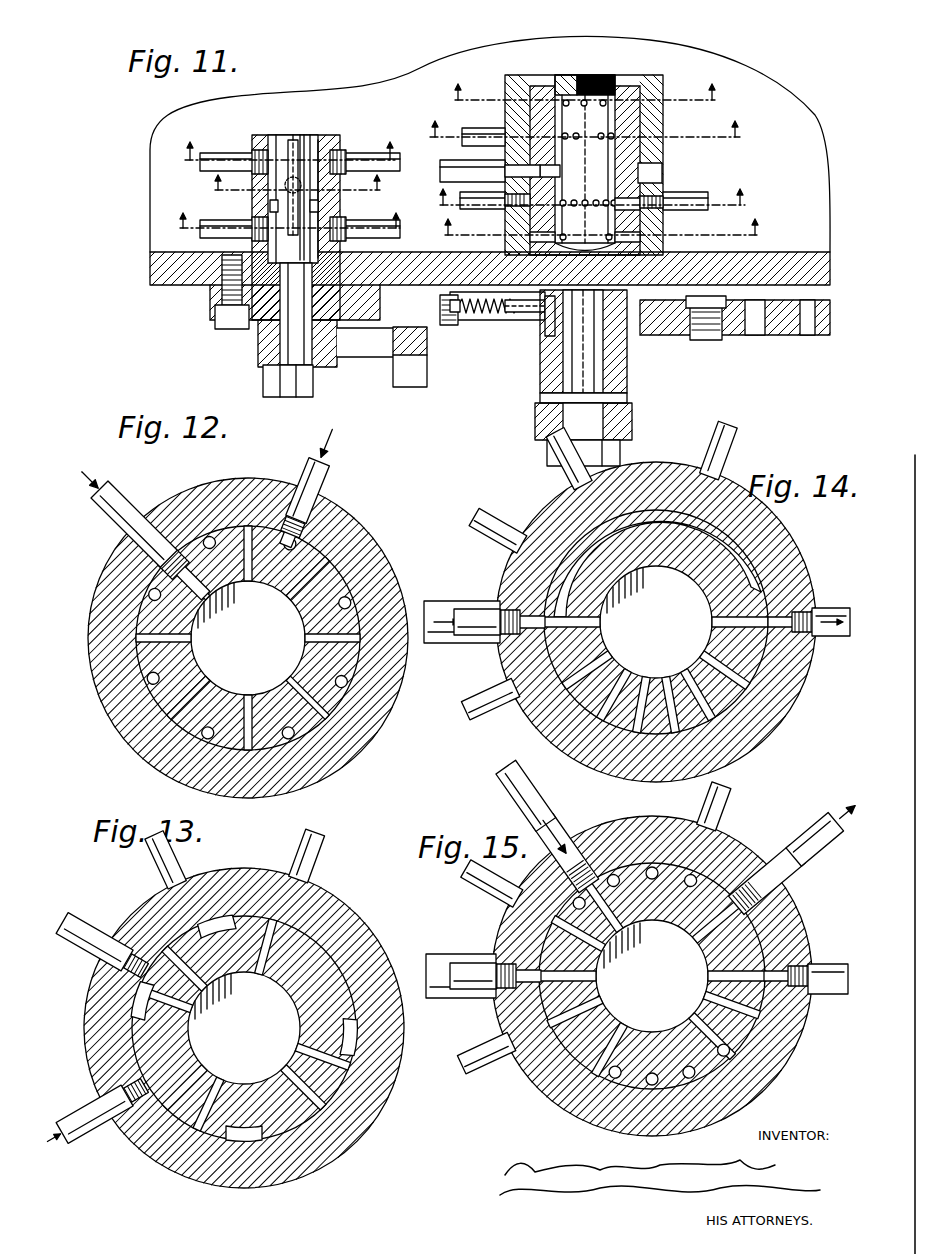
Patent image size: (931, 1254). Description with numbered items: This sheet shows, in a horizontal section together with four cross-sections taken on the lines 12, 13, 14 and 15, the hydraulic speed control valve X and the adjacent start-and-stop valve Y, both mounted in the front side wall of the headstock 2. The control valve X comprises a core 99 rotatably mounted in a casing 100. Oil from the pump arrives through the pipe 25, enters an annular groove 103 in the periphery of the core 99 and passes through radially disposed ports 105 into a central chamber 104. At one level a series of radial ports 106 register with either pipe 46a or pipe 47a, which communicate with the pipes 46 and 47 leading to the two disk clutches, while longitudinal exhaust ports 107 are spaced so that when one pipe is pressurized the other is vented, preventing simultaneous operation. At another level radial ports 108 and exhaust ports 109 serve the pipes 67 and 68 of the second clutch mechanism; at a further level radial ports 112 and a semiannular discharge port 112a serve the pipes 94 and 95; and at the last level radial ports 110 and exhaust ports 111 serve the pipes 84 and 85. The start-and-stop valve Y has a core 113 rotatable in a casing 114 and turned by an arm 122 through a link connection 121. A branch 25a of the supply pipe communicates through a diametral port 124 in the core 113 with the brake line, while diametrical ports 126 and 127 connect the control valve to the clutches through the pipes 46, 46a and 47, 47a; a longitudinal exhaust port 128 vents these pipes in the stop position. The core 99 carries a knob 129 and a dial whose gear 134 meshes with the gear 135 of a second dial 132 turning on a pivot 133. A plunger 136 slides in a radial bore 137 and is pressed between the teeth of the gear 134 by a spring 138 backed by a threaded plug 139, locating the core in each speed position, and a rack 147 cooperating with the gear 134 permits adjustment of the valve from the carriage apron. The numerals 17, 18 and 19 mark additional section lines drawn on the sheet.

In FIG. 11, the headstock 2 is at (165, 285).
In FIG. 11, the section line 12— 12 is at (583, 84).
In FIG. 11, the section line 13— 13 is at (584, 129).
In FIG. 11, the section line 14— 14 is at (589, 199).
In FIG. 11, the section line 15— 15 is at (601, 228).
In FIG. 11, the section line 17- 17 is at (290, 142).
In FIG. 11, the section line 18- 18 is at (295, 187).
In FIG. 11, the section line 19- 19 is at (282, 225).
In FIG. 11, the pipe 25 is at (455, 165).
In FIG. 14, the pipe 25 is at (480, 636).
In FIG. 15, the pipe 25 is at (483, 962).
In FIG. 11, the branch 25a is at (285, 184).
In FIG. 11, the pipe 46 is at (210, 238).
In FIG. 11, the pipe 46a is at (372, 238).
In FIG. 12, the pipe 46a is at (141, 533).
In FIG. 14, the pipe 46a is at (536, 468).
In FIG. 13, the pipe 46a is at (126, 863).
In FIG. 15, the pipe 46a is at (538, 826).
In FIG. 11, the pipe 47 is at (225, 153).
In FIG. 11, the pipe 47a is at (360, 153).
In FIG. 12, the pipe 47a is at (334, 487).
In FIG. 14, the pipe 47a is at (735, 450).
In FIG. 13, the pipe 47a is at (331, 856).
In FIG. 15, the pipe 47a is at (741, 804).
In FIG. 11, the pipe 67 is at (480, 128).
In FIG. 14, the pipe 67 is at (486, 533).
In FIG. 13, the pipe 67 is at (103, 943).
In FIG. 15, the pipe 67 is at (476, 887).
In FIG. 14, the pipe 68 is at (490, 711).
In FIG. 13, the pipe 68 is at (95, 1114).
In FIG. 15, the pipe 68 is at (486, 1065).
In FIG. 15, the pipe 84 is at (555, 837).
In FIG. 15, the pipe 85 is at (796, 855).
In FIG. 11, the pipe 94 is at (495, 209).
In FIG. 14, the pipe 94 is at (472, 640).
In FIG. 15, the pipe 94 is at (473, 993).
In FIG. 11, the pipe 95 is at (700, 192).
In FIG. 14, the pipe 95 is at (810, 604).
In FIG. 15, the pipe 95 is at (806, 996).
In FIG. 11, the core 99 is at (640, 120).
In FIG. 12, the core 99 is at (215, 638).
In FIG. 14, the core 99 is at (695, 622).
In FIG. 13, the core 99 is at (270, 1028).
In FIG. 15, the core 99 is at (685, 976).
In FIG. 11, the casing 100 is at (510, 58).
In FIG. 12, the casing 100 is at (248, 638).
In FIG. 14, the casing 100 is at (656, 622).
In FIG. 13, the casing 100 is at (244, 1028).
In FIG. 15, the casing 100 is at (652, 976).
In FIG. 11, the annular groove 103 is at (662, 172).
In FIG. 11, the chamber 104 is at (598, 90).
In FIG. 12, the chamber 104 is at (248, 638).
In FIG. 14, the chamber 104 is at (656, 622).
In FIG. 13, the chamber 104 is at (244, 1028).
In FIG. 15, the chamber 104 is at (652, 976).
In FIG. 11, the radially disposed ports 105 is at (560, 170).
In FIG. 11, the radial ports 106 is at (565, 75).
In FIG. 12, the radial ports 106 is at (248, 674).
In FIG. 12, the exhaust ports 107 is at (247, 662).
In FIG. 11, the radial ports 108 is at (586, 113).
In FIG. 13, the radial ports 108 is at (245, 984).
In FIG. 11, the exhaust ports 109 is at (570, 140).
In FIG. 13, the exhaust ports 109 is at (273, 1031).
In FIG. 11, the radial ports 110 is at (530, 238).
In FIG. 15, the radial ports 110 is at (694, 1012).
In FIG. 15, the exhaust ports 111 is at (701, 976).
In FIG. 11, the radial ports 112 is at (628, 206).
In FIG. 14, the radial ports 112 is at (689, 710).
In FIG. 11, the semiannular discharge port 112a is at (588, 213).
In FIG. 14, the semiannular discharge port 112a is at (657, 528).
In FIG. 11, the valve core 113 is at (280, 135).
In FIG. 11, the casing 114 is at (262, 135).
In FIG. 11, the link connection 121 is at (402, 370).
In FIG. 11, the arm 122 is at (360, 357).
In FIG. 11, the diametral port 124 is at (270, 206).
In FIG. 11, the diametrical port 126 is at (318, 210).
In FIG. 11, the diametrical port 127 is at (305, 150).
In FIG. 11, the exhaust port 128 is at (296, 140).
In FIG. 11, the knob 129 is at (535, 425).
In FIG. 11, the second dial 132 is at (755, 335).
In FIG. 11, the pivot 133 is at (708, 340).
In FIG. 11, the gear 134 is at (583, 346).
In FIG. 11, the gear 135 is at (806, 335).
In FIG. 11, the plunger 136 is at (520, 312).
In FIG. 11, the bore 137 is at (468, 320).
In FIG. 11, the spring 138 is at (450, 325).
In FIG. 11, the threaded plug 139 is at (450, 306).
In FIG. 11, the rack 147 is at (548, 336).
In FIG. 11, the control valve X is at (685, 80).
In FIG. 11, the valve Y is at (339, 148).